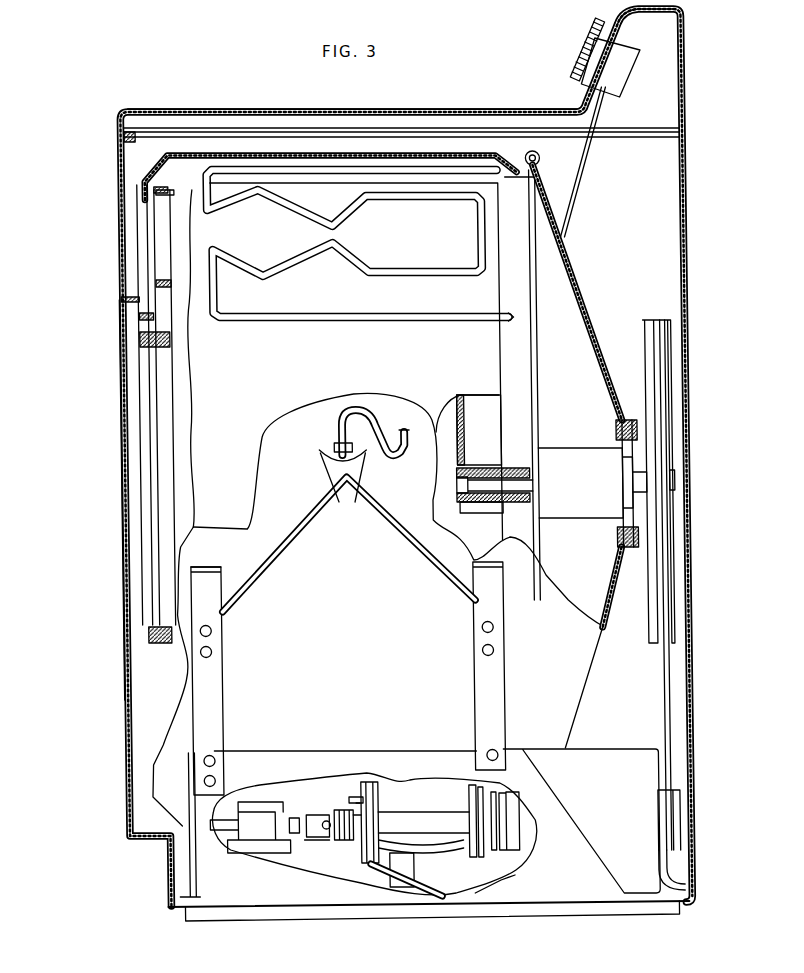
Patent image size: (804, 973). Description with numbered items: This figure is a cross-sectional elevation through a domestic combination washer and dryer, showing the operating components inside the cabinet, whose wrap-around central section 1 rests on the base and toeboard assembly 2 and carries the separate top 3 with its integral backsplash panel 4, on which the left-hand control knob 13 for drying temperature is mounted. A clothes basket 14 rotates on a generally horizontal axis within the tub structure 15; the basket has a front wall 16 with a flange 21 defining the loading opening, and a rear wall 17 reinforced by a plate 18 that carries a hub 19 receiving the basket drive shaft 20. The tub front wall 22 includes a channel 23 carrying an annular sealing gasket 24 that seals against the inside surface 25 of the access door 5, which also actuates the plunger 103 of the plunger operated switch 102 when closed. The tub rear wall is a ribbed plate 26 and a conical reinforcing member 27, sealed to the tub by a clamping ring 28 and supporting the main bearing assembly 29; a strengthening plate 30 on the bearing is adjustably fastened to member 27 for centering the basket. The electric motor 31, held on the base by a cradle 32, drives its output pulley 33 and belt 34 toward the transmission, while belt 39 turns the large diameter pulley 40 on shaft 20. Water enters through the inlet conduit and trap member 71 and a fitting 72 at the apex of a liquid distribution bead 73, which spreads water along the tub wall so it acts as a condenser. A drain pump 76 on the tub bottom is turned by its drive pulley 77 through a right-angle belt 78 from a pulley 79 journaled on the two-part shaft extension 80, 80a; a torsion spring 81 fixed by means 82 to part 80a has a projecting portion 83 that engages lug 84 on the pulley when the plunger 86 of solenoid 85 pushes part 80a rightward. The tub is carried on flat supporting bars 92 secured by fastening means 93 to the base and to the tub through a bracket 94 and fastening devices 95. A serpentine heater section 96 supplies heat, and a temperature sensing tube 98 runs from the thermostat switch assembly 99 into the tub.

The wrap-around central section 1 is at (122, 190).
The base and toeboard assembly 2 is at (163, 879).
The top 3 is at (214, 108).
The backsplash panel 4 is at (619, 12).
The access door 5 is at (117, 440).
The left-hand control knob 13 is at (589, 50).
The clothes basket 14 is at (198, 183).
The tub structure 15 is at (457, 151).
The front wall 16 is at (177, 233).
The rear wall 17 is at (462, 460).
The reinforcing plate 18 is at (507, 413).
The hub 19 is at (483, 537).
The basket drive shaft 20 is at (520, 487).
The flange 21 is at (163, 262).
The tub front wall 22 is at (156, 222).
The channel 23 is at (175, 295).
The annular sealing gasket 24 is at (147, 343).
The inside surface of access door 25 is at (137, 377).
The ribbed plate 26 is at (541, 364).
The conical reinforcing member 27 is at (585, 281).
The clamping ring 28 is at (546, 152).
The main bearing assembly 29 is at (580, 460).
The strengthening plate 30 is at (620, 545).
The electric motor 31 is at (612, 810).
The cradle 32 is at (684, 880).
The output pulley 33 is at (500, 888).
The flexible belt 34 is at (477, 862).
The flexible belt 39 is at (658, 692).
The large diameter pulley 40 is at (670, 573).
The water inlet conduit and trap member 71 is at (394, 463).
The fitting 72 is at (337, 448).
The liquid distribution bead 73 is at (387, 524).
The drain pump 76 is at (426, 858).
The drive pulley 77 is at (403, 888).
The flexible belt 78 is at (366, 884).
The pulley 79 is at (369, 803).
The shaft extension part 80 is at (443, 810).
The shaft extension part 80a is at (309, 840).
The torsion spring 81 is at (349, 810).
The securing means 82 is at (327, 808).
The outwardly projecting portion 83 is at (343, 843).
The lug 84 is at (354, 797).
The solenoid 85 is at (249, 837).
The plunger 86 is at (289, 830).
The supporting members 92 is at (212, 690).
The fastening means 93 is at (214, 778).
The bracket 94 is at (213, 580).
The fastening devices 95 is at (212, 651).
The heater section 96 is at (345, 322).
The temperature sensing tube 98 is at (584, 185).
The thermostat switch assembly 99 is at (615, 70).
The plunger operated switch 102 is at (144, 308).
The plunger 103 is at (146, 318).